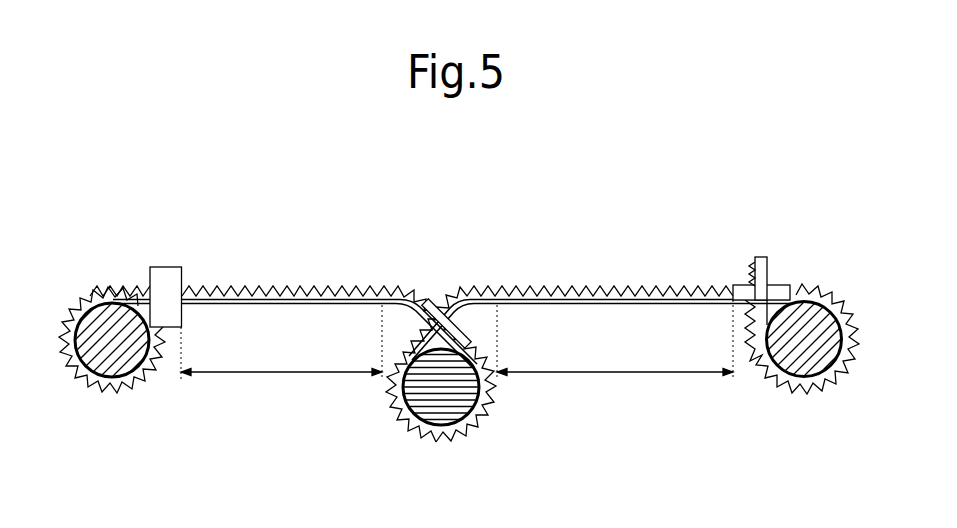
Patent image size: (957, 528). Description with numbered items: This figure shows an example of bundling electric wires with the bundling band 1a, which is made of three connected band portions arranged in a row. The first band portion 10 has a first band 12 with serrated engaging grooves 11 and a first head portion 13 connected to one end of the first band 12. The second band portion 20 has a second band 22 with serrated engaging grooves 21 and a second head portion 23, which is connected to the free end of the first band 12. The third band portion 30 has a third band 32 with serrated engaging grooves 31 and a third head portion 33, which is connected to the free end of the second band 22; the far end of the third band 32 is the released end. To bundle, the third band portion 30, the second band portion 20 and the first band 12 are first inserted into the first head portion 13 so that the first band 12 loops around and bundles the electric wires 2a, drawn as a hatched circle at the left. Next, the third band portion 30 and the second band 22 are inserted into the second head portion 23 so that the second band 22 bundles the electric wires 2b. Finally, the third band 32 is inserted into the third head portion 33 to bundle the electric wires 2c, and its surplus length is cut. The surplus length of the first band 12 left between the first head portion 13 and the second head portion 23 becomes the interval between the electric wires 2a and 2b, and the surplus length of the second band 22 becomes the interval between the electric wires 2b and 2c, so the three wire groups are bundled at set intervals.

The conveyor belt assembly 1a is at (322, 258).
The electric wires 2a is at (90, 338).
The electric wires 2b is at (403, 417).
The electric wires 2c is at (833, 310).
The first band portion 10 is at (378, 405).
The engaging grooves 11 is at (98, 293).
The first band 12 is at (275, 303).
The first head portion 13 is at (181, 270).
The second band portion 20 is at (380, 432).
The engaging grooves 21 is at (472, 421).
The second band 22 is at (472, 432).
The second head portion 23 is at (431, 287).
The third band portion 30 is at (733, 403).
The engaging grooves 31 is at (848, 367).
The third band 32 is at (848, 326).
The third head portion 33 is at (789, 285).